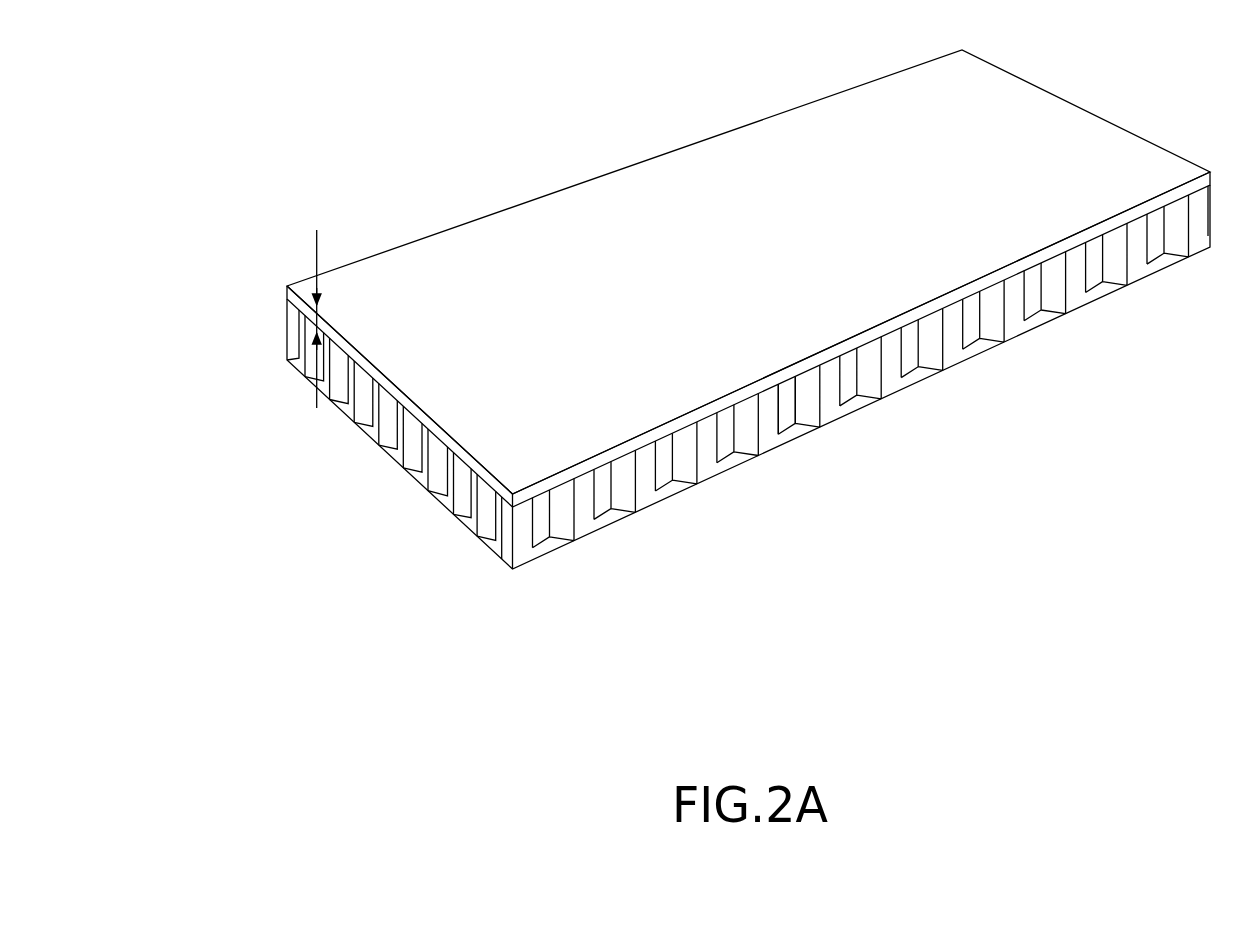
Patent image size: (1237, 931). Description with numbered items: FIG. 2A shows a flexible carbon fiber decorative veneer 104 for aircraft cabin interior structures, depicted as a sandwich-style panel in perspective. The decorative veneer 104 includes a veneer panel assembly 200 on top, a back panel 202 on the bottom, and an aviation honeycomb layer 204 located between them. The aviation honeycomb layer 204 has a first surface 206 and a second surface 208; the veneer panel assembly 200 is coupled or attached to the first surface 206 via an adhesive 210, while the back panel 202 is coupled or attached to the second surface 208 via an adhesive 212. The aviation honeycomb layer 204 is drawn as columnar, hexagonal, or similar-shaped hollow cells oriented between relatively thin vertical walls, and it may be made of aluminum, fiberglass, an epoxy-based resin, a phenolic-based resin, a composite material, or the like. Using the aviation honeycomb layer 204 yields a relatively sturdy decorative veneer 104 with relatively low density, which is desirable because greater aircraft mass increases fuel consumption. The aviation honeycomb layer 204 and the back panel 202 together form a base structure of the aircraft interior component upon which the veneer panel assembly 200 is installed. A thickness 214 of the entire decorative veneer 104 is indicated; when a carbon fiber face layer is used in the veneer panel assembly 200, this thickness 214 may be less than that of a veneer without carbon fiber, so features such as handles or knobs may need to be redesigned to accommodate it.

The decorative veneer 104 is at (290, 110).
The veneer panel assembly 200 is at (468, 221).
The back panel 202 is at (541, 557).
The aviation honeycomb layer 204 is at (649, 490).
The first surface 206 is at (670, 441).
The second surface 208 is at (731, 461).
The adhesive 210 is at (787, 416).
The adhesive 212 is at (698, 481).
The thickness 214 is at (316, 407).